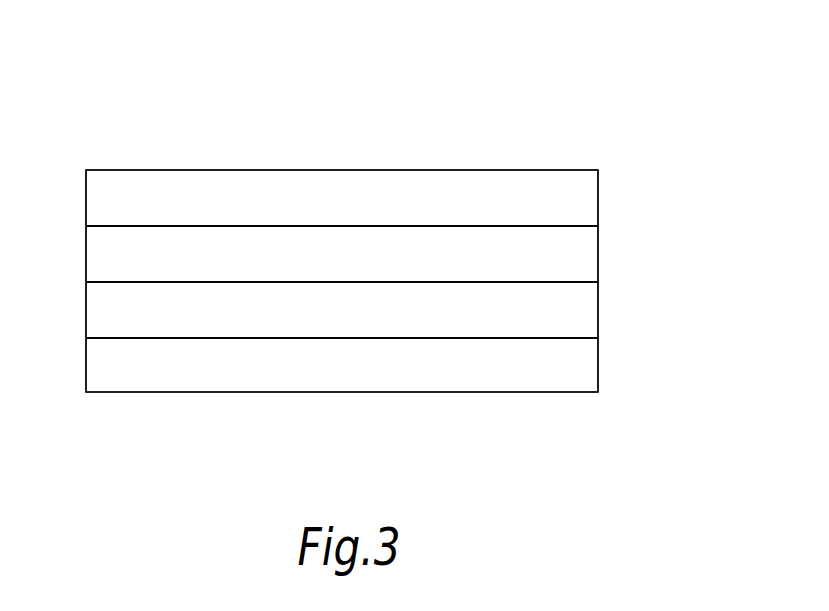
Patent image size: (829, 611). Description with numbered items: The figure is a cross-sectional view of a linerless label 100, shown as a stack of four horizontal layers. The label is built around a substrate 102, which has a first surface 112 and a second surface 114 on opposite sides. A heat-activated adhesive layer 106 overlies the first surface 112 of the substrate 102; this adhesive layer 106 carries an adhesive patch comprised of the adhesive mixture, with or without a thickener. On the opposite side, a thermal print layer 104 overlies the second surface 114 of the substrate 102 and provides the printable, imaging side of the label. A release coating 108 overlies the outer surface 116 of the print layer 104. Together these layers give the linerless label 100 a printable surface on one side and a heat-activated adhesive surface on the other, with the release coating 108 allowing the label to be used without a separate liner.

The linerless label 100 is at (642, 73).
The substrate 102 is at (86, 244).
The thermal print layer 104 is at (86, 300).
The heat-activated adhesive layer 106 is at (86, 188).
The release coating 108 is at (86, 357).
The first surface 112 is at (598, 226).
The second surface 114 is at (598, 282).
The surface 116 is at (598, 338).